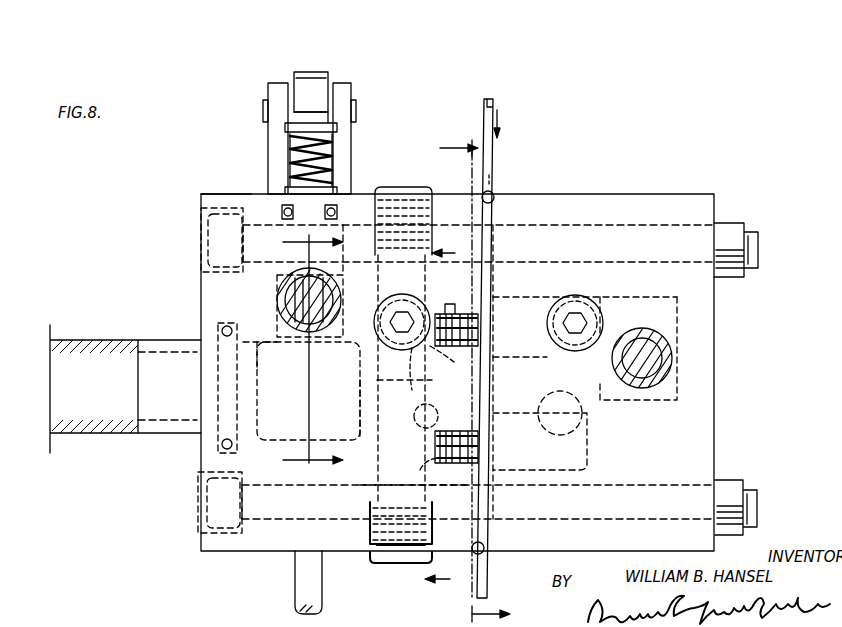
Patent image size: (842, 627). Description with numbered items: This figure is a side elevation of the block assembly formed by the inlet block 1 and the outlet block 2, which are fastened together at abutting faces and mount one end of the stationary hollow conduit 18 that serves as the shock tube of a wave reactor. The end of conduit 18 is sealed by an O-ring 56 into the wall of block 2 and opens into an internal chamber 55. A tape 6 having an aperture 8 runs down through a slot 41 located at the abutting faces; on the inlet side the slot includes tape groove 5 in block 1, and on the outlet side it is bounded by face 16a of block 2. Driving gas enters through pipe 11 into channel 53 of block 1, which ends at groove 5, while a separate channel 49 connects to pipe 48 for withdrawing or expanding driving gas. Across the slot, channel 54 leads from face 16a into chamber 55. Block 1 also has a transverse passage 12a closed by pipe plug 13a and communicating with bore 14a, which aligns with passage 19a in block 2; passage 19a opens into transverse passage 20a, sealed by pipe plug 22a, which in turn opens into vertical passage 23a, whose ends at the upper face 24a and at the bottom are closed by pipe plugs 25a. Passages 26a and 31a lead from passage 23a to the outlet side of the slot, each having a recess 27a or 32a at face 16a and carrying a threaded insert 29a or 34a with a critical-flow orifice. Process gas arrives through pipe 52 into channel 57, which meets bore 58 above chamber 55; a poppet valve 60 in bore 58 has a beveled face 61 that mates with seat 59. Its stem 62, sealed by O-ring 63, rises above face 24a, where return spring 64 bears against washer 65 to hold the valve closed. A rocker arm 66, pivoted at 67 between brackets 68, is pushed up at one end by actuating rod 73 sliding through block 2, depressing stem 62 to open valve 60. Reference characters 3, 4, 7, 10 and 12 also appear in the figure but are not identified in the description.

The inlet block 1 is at (694, 202).
The outlet block 2 is at (196, 226).
The passage 3 is at (651, 248).
The passage 4 is at (266, 262).
The tape groove 5 is at (484, 554).
The tape 6 is at (488, 98).
The direction arrow 7 is at (498, 120).
The aperture 8 is at (494, 178).
The section line 10 is at (303, 351).
The driving gas pipe 11 is at (688, 374).
The section line 12 is at (450, 375).
The cylindrical passage 12a is at (604, 316).
The pipe plug 13a is at (578, 298).
The bore 14a is at (480, 324).
The face 16a is at (458, 226).
The hollow conduit 18 is at (82, 340).
The cylindrical passage 19a is at (478, 296).
The cylindrical passage 20a is at (364, 342).
The pipe plug 22a is at (396, 296).
The vertically-extending passage 23a is at (372, 486).
The upper face 24a is at (210, 194).
The pipe plugs 25a is at (402, 190).
The cylindrical passage 26a is at (454, 350).
The counterbore 27a is at (490, 332).
The threaded insert 29a is at (446, 308).
The cylindrical passage 31a is at (416, 440).
The counterbore 32a is at (480, 458).
The threaded insert 34a is at (420, 470).
The tape slot 41 is at (494, 196).
The pipe 48 is at (540, 410).
The channel 49 is at (596, 452).
The pipe 52 is at (280, 304).
The channel 53 is at (654, 300).
The channel 54 is at (466, 386).
The chamber 55 is at (274, 436).
The O-ring 56 is at (220, 332).
The channel 57 is at (328, 286).
The cylindrical bore 58 is at (280, 322).
The valve seat 59 is at (266, 342).
The poppet valve 60 is at (339, 258).
The beveled face 61 is at (342, 338).
The valve stem 62 is at (294, 158).
The O-ring seal 63 is at (282, 212).
The return spring 64 is at (338, 148).
The washer 65 is at (286, 128).
The rocker arm 66 is at (312, 72).
The pivot 67 is at (356, 106).
The brackets 68 is at (272, 78).
The actuating rod 73 is at (294, 580).